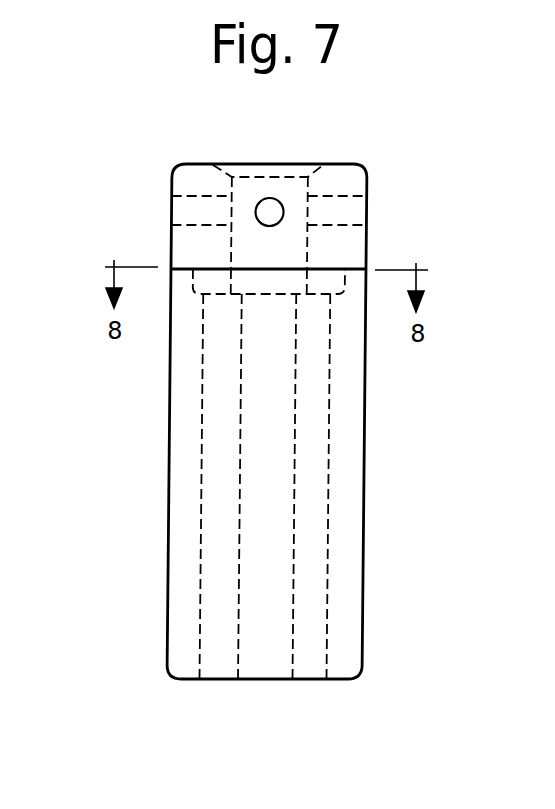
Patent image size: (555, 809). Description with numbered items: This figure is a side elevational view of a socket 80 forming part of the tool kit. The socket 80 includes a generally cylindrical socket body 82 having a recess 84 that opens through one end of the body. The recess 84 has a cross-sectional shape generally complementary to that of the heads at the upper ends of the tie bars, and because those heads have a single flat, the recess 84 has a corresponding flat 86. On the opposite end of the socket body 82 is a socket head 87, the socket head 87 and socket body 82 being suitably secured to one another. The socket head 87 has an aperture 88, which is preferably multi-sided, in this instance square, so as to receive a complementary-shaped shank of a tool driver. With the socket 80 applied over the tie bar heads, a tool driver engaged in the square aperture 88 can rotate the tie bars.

The socket 80 is at (141, 427).
The socket body 82 is at (351, 485).
The recess 84 is at (332, 645).
The flat 86 is at (298, 632).
The socket head 87 is at (366, 252).
The aperture 88 is at (235, 208).